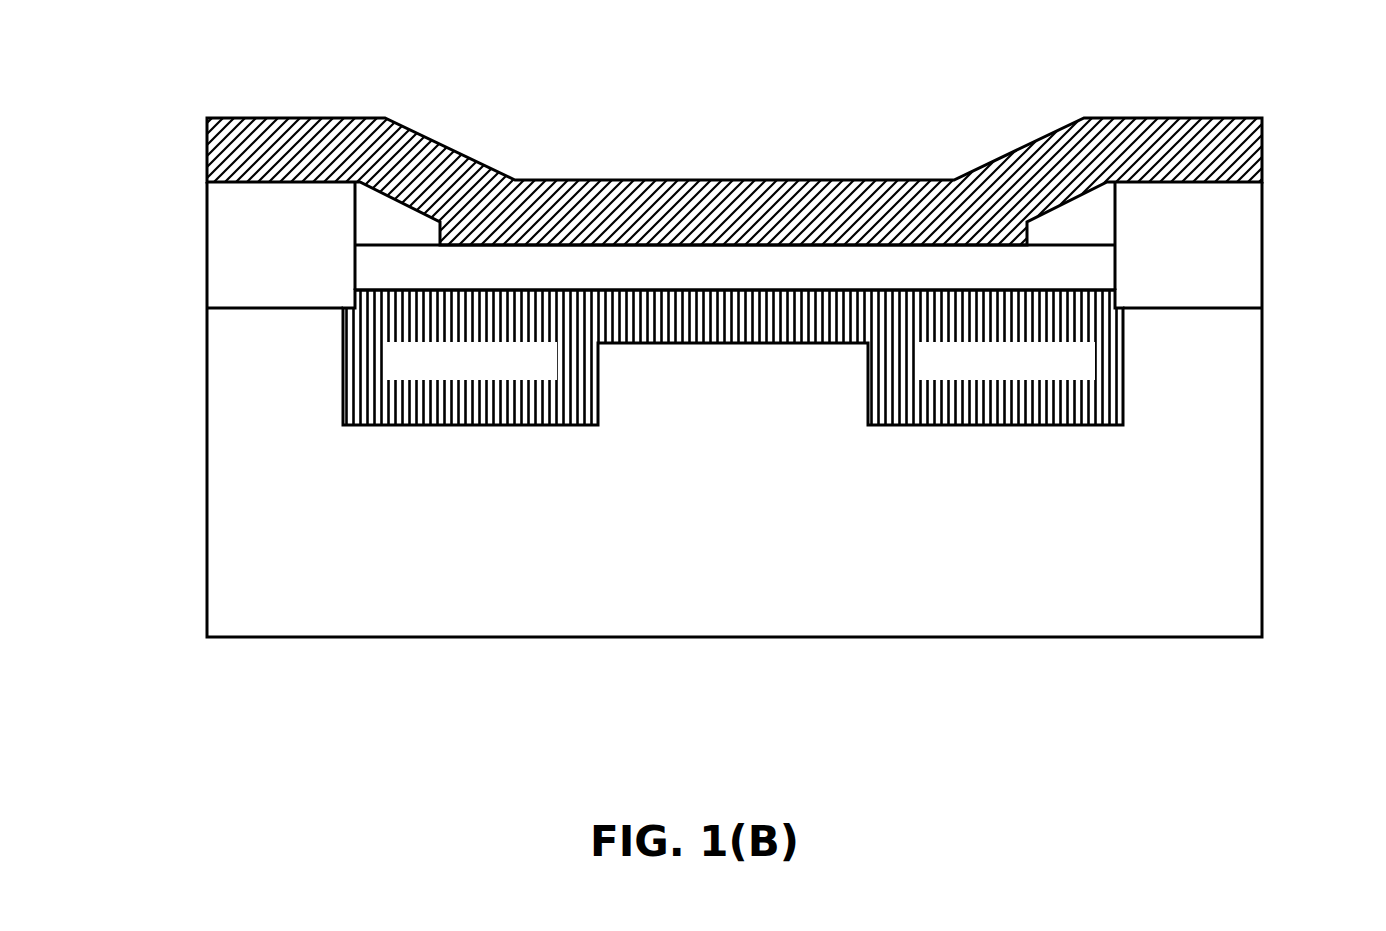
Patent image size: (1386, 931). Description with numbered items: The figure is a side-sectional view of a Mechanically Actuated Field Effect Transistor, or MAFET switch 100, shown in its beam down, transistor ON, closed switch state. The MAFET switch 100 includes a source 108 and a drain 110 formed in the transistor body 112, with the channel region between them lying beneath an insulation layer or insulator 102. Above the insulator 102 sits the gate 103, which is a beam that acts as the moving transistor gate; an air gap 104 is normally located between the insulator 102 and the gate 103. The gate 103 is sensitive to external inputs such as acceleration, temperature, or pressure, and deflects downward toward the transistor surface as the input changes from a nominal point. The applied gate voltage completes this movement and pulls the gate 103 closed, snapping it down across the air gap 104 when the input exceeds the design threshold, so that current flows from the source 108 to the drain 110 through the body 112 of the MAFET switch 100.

The MAFET switch 100 is at (1303, 181).
The insulation layer 102 is at (630, 258).
The gate 103 is at (866, 190).
The air gap 104 is at (392, 213).
The source 108 is at (343, 398).
The drain 110 is at (1123, 398).
The semiconductor body / channel region 112 is at (752, 298).